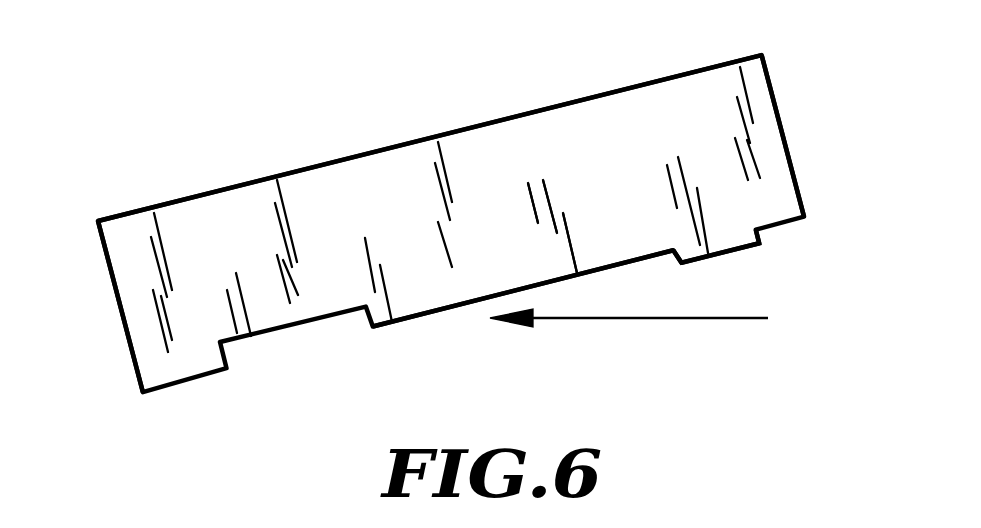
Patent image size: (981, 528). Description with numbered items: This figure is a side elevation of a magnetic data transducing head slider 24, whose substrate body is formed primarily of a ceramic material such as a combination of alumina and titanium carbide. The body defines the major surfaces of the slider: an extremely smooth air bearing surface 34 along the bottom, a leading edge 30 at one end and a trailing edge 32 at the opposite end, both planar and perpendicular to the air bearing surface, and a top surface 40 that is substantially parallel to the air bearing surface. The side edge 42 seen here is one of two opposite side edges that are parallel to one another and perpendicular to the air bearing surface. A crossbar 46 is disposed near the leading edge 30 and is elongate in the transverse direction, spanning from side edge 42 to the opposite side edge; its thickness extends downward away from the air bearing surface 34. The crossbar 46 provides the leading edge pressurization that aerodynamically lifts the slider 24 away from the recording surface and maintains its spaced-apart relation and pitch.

The transducing head slider 24 is at (201, 112).
The leading edge 30 is at (788, 138).
The trailing edge 32 is at (101, 253).
The air bearing surface 34 is at (430, 320).
The top surface 40 is at (397, 148).
The side edge 42 is at (580, 127).
The crossbar 46 is at (738, 250).